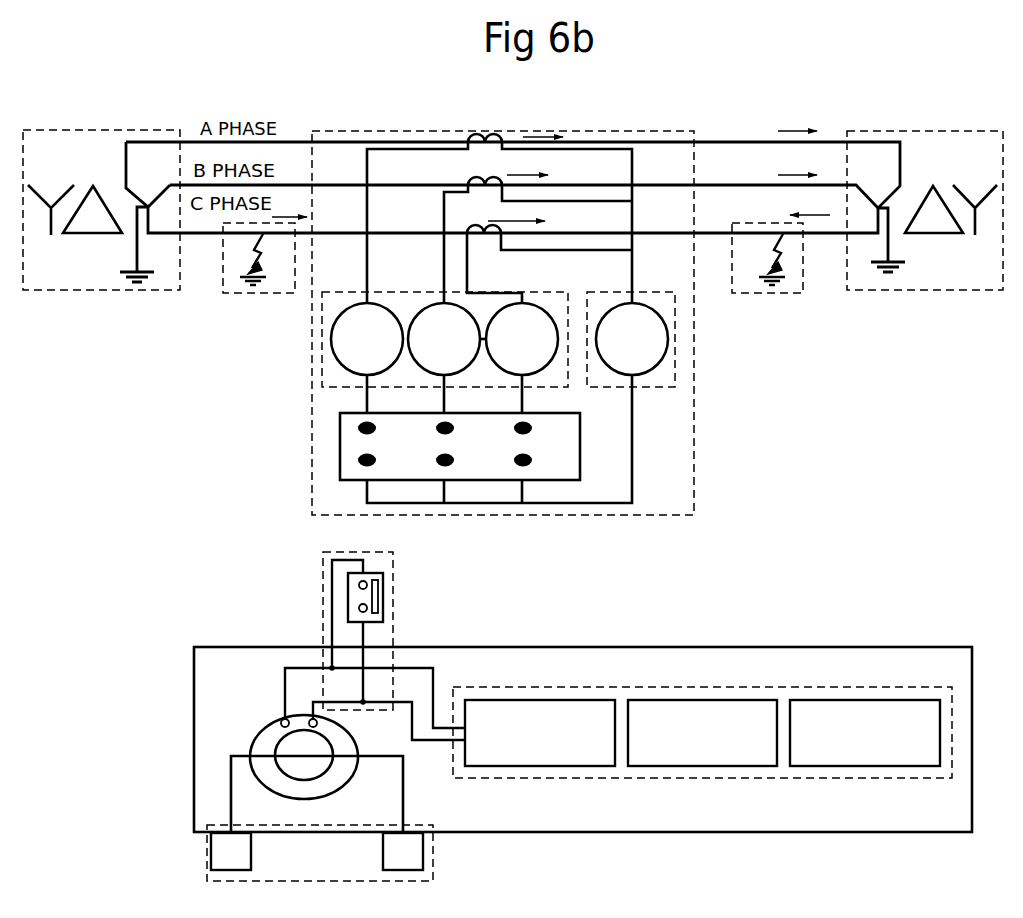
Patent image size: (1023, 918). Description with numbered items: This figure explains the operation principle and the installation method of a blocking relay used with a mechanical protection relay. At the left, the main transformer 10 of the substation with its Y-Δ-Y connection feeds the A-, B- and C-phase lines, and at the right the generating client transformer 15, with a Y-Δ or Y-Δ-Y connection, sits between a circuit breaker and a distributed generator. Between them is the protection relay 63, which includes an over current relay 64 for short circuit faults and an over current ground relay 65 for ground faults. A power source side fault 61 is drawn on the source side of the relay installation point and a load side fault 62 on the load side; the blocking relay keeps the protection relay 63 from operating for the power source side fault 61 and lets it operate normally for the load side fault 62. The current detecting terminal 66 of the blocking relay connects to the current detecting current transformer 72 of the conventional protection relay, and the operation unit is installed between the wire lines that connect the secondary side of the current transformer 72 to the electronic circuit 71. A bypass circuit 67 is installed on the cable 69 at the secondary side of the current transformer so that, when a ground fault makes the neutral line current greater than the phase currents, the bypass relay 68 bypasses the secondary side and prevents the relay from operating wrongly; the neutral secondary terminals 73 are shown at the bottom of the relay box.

The main transformer 10 is at (86, 292).
The generating client transformer 15 is at (925, 290).
The power source side fault 61 is at (245, 293).
The load side fault 62 is at (767, 293).
The protection relay 63 is at (695, 487).
The over current relay 64 is at (322, 355).
The over current ground relay 65 is at (655, 387).
The current detecting terminal 66 is at (340, 450).
The bypass circuit 67 is at (393, 568).
The bypass relay 68 is at (383, 598).
The cable 69 is at (330, 697).
The electronic circuit 71 is at (642, 687).
The current detecting current transformer 72 is at (258, 737).
The terminals NS/NL 73 is at (433, 845).